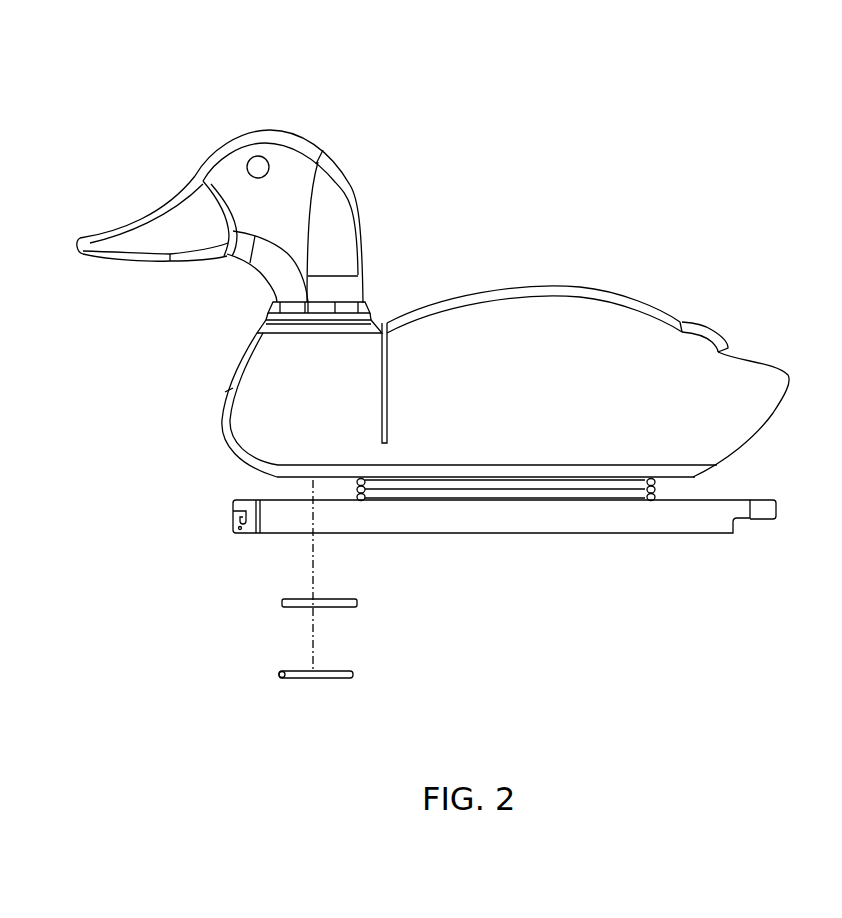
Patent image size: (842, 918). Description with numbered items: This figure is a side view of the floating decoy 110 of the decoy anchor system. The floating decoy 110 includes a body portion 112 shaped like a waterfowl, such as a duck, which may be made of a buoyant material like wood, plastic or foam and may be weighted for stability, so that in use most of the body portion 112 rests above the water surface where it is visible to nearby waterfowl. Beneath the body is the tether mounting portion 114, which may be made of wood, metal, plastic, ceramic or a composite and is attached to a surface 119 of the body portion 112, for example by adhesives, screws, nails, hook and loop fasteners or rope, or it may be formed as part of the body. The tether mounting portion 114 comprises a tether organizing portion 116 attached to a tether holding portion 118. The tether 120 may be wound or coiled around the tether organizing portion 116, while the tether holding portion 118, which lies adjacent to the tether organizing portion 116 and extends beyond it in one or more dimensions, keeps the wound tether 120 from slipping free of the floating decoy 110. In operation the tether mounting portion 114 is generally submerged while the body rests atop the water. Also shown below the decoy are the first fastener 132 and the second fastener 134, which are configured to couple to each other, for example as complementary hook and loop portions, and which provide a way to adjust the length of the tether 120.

The floating decoy 110 is at (433, 233).
The body portion 112 is at (515, 350).
The tether mounting portion 114 is at (547, 510).
The tether organizing portion 116 is at (625, 483).
The tether holding portion 118 is at (335, 510).
The surface 119 is at (512, 477).
The tether 120 is at (357, 483).
The first fastener 132 is at (292, 607).
The second fastener 134 is at (313, 675).